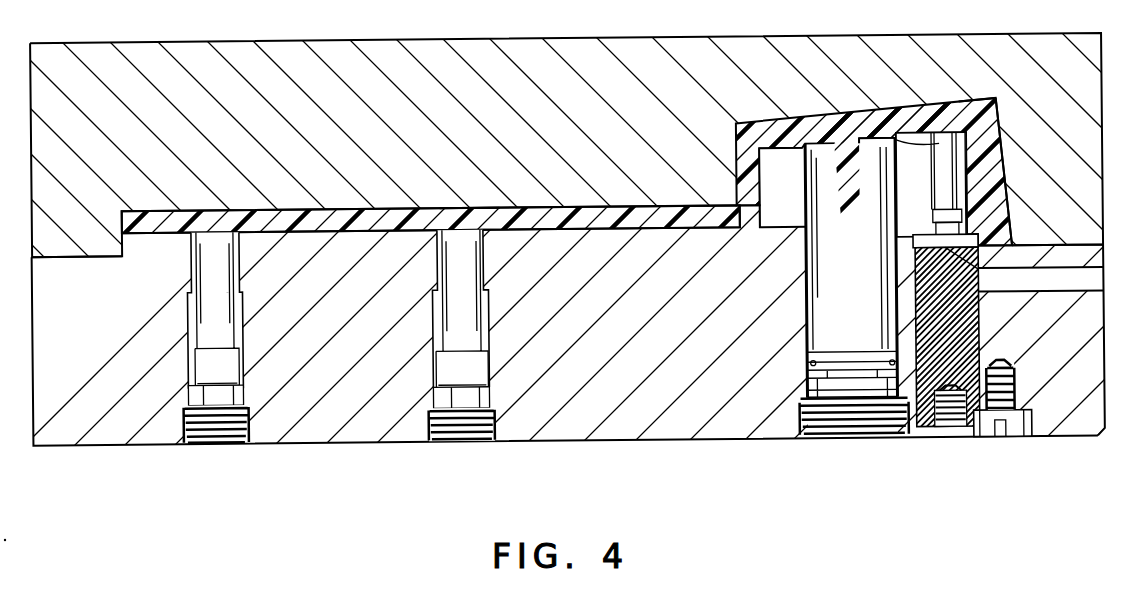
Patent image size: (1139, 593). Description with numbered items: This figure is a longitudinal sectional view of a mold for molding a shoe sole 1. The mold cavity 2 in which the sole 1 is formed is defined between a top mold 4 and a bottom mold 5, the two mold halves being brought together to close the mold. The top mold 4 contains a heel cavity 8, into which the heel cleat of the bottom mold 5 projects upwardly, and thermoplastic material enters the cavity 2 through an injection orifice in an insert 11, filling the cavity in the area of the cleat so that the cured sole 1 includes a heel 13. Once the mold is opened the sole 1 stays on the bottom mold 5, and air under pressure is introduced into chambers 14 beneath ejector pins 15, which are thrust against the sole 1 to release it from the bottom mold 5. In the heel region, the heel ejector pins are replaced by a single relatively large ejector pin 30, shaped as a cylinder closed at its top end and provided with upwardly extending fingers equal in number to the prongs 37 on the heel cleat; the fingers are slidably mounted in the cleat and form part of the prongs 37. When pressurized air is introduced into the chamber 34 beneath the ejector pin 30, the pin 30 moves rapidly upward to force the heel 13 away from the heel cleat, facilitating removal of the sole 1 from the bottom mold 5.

The shoe sole 1 is at (470, 207).
The mold cavity 2 is at (282, 206).
The top mold 4 is at (756, 46).
The bottom mold 5 is at (620, 436).
The heel cavity 8 is at (762, 122).
The insert 11 is at (934, 218).
The heel 13 is at (995, 115).
The chambers 14 is at (243, 395).
The ejector pins 15 is at (229, 334).
The ejector pin 30 is at (805, 330).
The chamber 34 is at (808, 390).
The prongs 37 is at (890, 138).